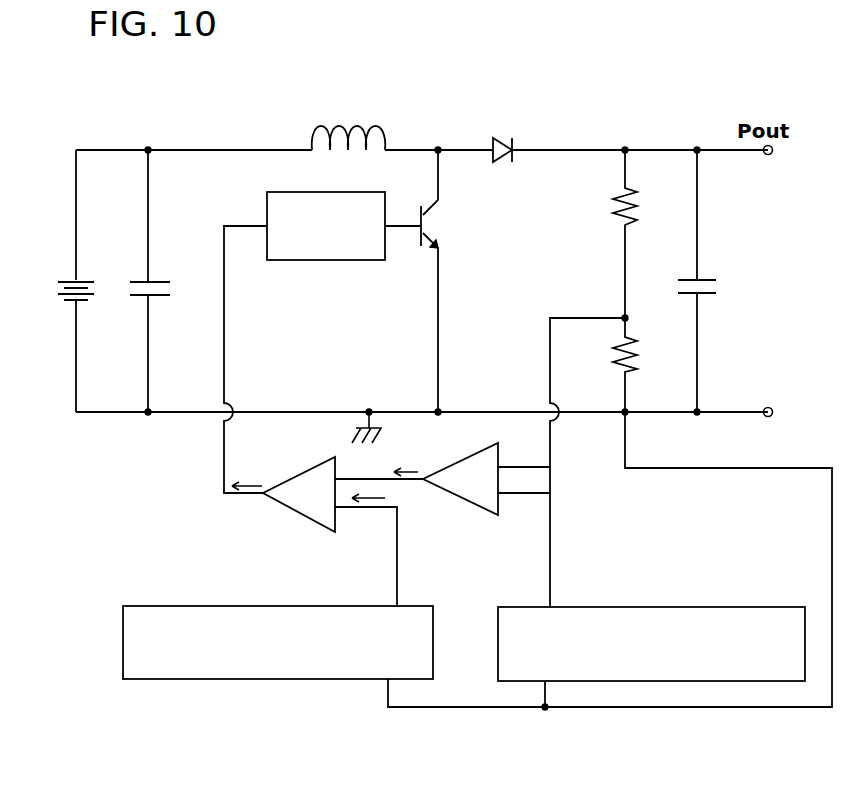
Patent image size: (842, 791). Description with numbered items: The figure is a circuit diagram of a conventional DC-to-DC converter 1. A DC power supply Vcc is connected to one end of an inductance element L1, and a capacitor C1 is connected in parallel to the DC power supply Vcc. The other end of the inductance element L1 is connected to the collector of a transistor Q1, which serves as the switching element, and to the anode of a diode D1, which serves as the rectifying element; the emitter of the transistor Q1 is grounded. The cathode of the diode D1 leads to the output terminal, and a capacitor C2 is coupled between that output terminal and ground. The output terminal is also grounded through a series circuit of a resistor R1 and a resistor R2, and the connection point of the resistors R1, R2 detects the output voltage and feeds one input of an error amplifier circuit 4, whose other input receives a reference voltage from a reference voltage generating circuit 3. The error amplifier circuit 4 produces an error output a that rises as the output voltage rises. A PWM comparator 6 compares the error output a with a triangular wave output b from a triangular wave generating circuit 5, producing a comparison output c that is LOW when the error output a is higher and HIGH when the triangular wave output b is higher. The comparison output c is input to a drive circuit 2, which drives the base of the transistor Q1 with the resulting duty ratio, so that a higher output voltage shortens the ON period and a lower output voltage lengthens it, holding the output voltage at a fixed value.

The DC-to-DC converter 1 is at (438, 112).
The drive circuit 2 is at (345, 262).
The reference voltage generating circuit 3 is at (720, 606).
The error amplifier circuit 4 is at (478, 430).
The triangular wave generating circuit 5 is at (165, 606).
The PWM comparator 6 is at (290, 513).
The inductance element L1 is at (349, 126).
The diode D1 is at (505, 134).
The transistor Q1 is at (448, 281).
The capacitor C1 is at (141, 281).
The capacitor C2 is at (689, 281).
The resistor R1 is at (643, 232).
The resistor R2 is at (643, 365).
The DC power supply Vcc is at (61, 281).
The error output a is at (406, 462).
The triangular wave output b is at (368, 514).
The comparison output c is at (247, 477).